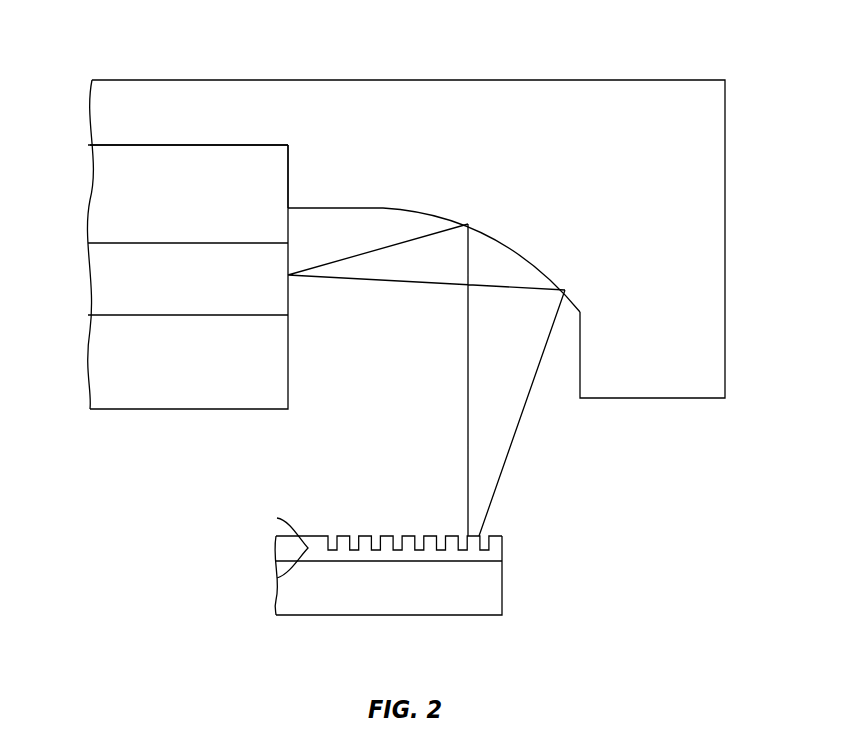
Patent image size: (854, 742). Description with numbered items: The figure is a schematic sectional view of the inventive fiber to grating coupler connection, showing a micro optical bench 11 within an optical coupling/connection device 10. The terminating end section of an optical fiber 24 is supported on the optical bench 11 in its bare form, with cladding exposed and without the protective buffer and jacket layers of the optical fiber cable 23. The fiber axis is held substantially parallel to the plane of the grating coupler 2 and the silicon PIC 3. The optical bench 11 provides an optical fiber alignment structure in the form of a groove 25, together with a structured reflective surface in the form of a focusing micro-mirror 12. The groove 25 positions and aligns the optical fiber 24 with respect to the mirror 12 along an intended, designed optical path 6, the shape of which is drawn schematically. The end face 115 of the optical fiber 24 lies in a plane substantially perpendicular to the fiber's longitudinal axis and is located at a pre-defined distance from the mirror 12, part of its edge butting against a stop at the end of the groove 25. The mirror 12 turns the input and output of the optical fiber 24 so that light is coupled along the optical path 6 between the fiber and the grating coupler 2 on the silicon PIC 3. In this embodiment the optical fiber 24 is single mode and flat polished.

The optical coupling/connection device 10 is at (543, 50).
The micro optical bench 11 is at (700, 136).
The focusing micro-mirror 12 is at (548, 265).
The end face 115 is at (286, 176).
The grating coupler 2 is at (501, 552).
The silicon PIC 3 is at (483, 585).
The optical path 6 is at (519, 441).
The optical fiber cable 23 is at (293, 369).
The optical fiber 24 is at (118, 199).
The groove 25 is at (156, 148).